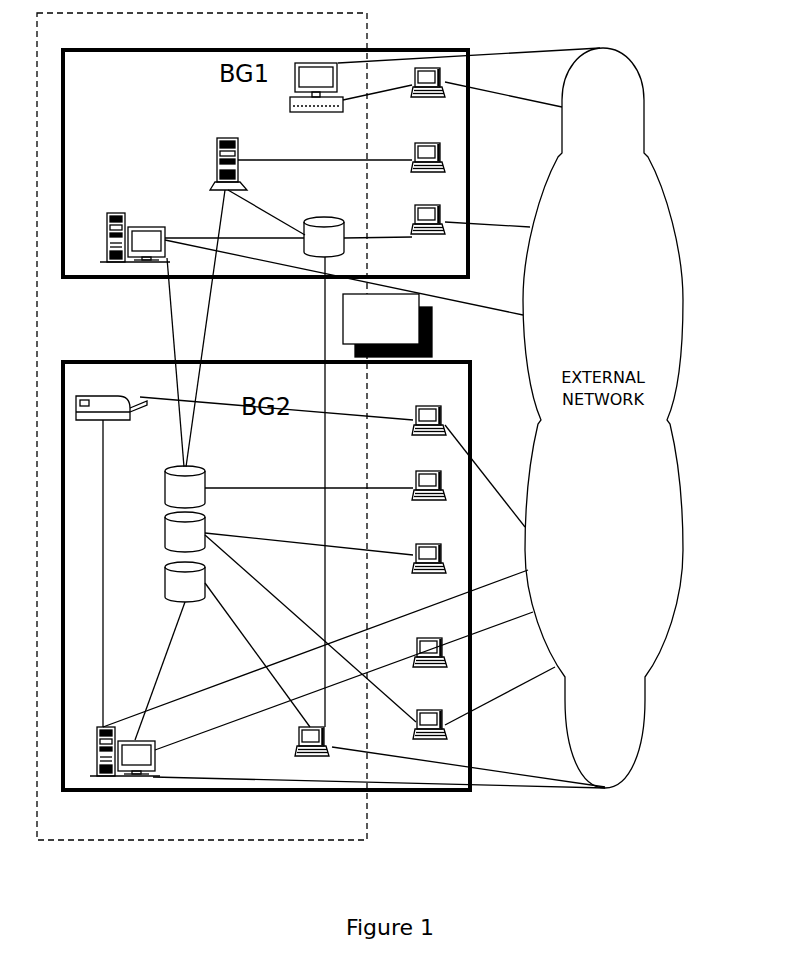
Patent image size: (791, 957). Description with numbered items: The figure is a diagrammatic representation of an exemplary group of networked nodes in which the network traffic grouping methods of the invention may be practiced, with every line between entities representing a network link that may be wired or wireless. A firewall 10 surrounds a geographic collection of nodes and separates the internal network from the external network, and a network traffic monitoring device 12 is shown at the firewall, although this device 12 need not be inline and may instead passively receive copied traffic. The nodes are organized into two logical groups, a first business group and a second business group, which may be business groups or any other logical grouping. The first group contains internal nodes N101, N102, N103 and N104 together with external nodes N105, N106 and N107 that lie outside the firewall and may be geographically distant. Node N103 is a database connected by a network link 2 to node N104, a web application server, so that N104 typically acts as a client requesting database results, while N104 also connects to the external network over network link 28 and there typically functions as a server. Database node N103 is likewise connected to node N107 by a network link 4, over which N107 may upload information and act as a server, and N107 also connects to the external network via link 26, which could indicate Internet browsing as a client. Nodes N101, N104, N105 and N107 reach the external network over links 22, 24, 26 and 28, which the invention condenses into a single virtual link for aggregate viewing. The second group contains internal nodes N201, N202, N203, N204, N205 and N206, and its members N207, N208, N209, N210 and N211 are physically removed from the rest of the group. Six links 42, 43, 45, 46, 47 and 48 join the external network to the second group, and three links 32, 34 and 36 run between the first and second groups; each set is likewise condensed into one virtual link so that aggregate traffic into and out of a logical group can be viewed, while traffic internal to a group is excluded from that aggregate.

The firewall 10 is at (165, 840).
The network traffic monitoring device 12 is at (387, 325).
The network link 2 is at (234, 230).
The network link 4 is at (378, 228).
The network link 22 is at (469, 49).
The network link 24 is at (503, 101).
The network link 26 is at (487, 215).
The network link 28 is at (344, 281).
The link between logical groups 32 is at (164, 362).
The link between logical groups 34 is at (211, 328).
The link between logical groups 36 is at (311, 492).
The link 42 is at (485, 476).
The link 43 is at (315, 640).
The link 45 is at (344, 677).
The link 46 is at (500, 695).
The link 47 is at (468, 767).
The link 48 is at (379, 794).
The internal network node N101 is at (316, 100).
The internal network node N102 is at (227, 154).
The database node N103 is at (323, 225).
The web application server node N104 is at (135, 228).
The external network node N105 is at (428, 95).
The external network node N106 is at (428, 170).
The external network node N107 is at (428, 233).
The internal network node N201 is at (162, 487).
The internal network node N202 is at (162, 532).
The internal network node N203 is at (162, 582).
The internal network node N204 is at (146, 753).
The internal network node N205 is at (288, 743).
The internal network node N206 is at (111, 397).
The network node N207 is at (429, 433).
The network node N208 is at (429, 498).
The network node N209 is at (429, 571).
The network node N210 is at (430, 665).
The network node N211 is at (430, 736).